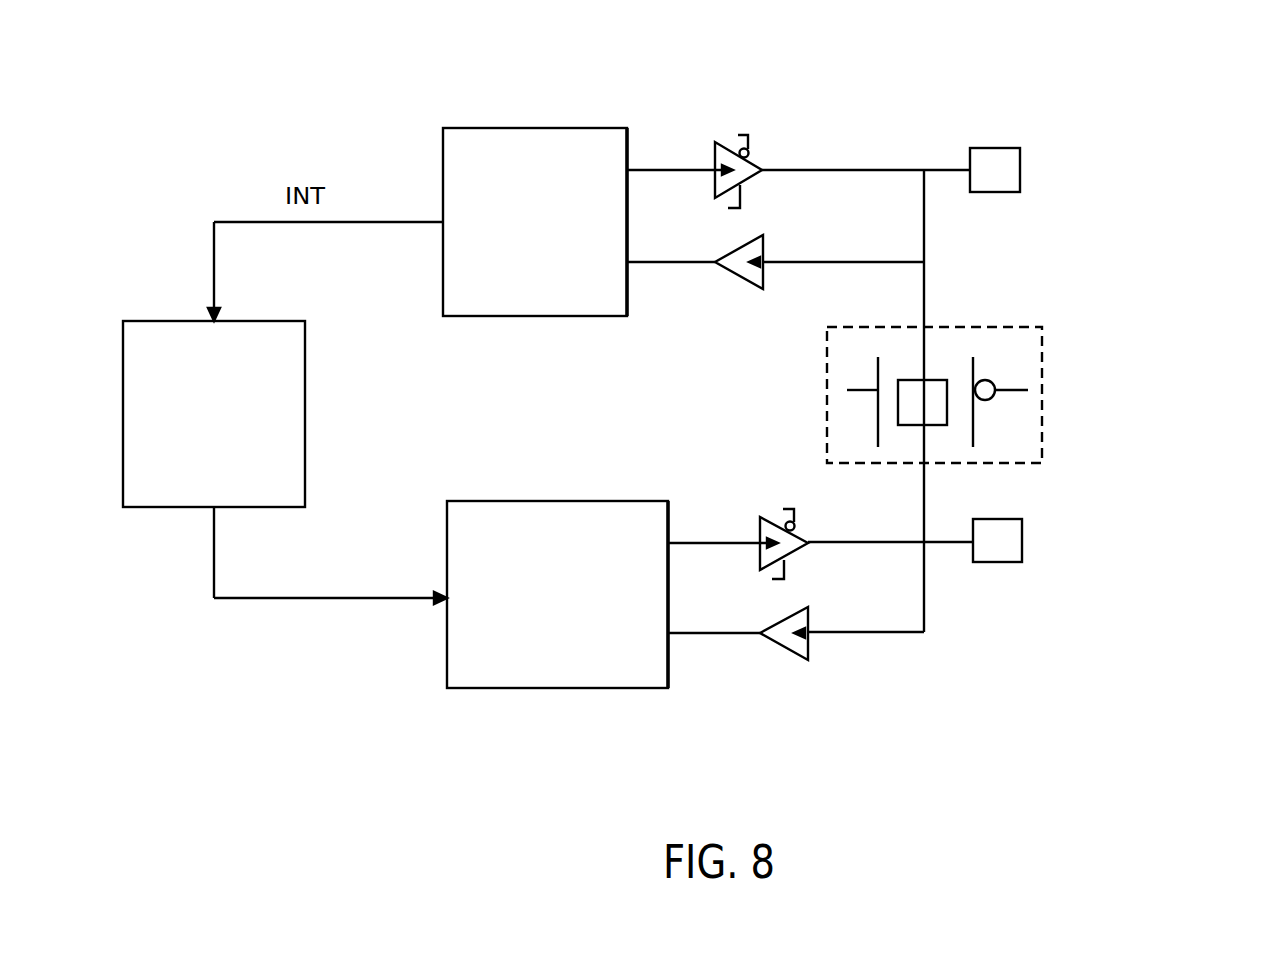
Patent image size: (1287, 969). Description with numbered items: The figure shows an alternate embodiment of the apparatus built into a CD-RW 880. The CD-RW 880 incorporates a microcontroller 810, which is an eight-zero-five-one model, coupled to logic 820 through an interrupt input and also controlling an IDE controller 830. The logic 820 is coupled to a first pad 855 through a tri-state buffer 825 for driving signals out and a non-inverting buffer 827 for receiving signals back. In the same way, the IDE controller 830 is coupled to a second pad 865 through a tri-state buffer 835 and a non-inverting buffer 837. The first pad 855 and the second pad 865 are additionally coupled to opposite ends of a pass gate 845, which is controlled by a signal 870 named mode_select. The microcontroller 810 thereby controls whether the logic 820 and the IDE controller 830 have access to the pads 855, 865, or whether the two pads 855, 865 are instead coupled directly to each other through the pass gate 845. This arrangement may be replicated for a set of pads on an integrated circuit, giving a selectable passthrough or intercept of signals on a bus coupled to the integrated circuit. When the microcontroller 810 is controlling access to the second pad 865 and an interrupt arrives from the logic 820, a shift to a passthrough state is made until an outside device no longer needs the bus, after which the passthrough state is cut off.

The microcontroller 810 is at (145, 507).
The logic 820 is at (572, 128).
The tri-state buffer 825 is at (717, 150).
The non-inverting buffer 827 is at (750, 287).
The IDE controller 830 is at (480, 688).
The tri-state buffer 835 is at (760, 518).
The non-inverting buffer 837 is at (783, 648).
The pass gate 845 is at (1017, 325).
The first pad 855 is at (993, 148).
The second pad 865 is at (1005, 562).
The signal 870 is at (1123, 397).
The CD-RW 880 is at (1270, 547).